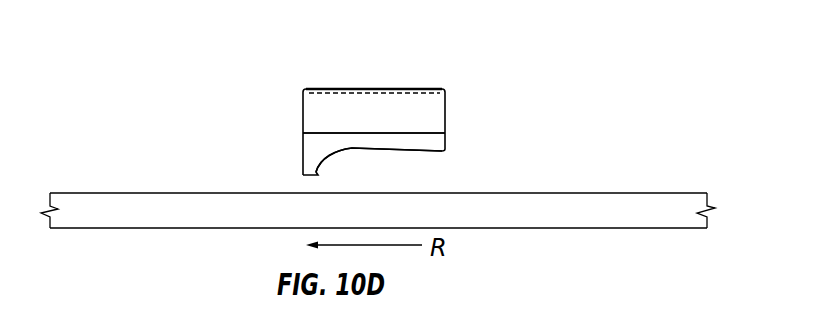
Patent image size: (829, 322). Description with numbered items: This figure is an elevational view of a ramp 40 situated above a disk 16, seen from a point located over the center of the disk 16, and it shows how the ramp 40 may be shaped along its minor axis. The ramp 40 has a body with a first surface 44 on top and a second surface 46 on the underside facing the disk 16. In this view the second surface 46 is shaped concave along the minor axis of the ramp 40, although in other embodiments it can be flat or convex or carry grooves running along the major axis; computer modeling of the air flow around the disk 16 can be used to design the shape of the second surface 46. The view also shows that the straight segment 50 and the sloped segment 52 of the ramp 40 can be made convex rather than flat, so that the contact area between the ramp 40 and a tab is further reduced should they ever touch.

The disk 16 is at (578, 222).
The ramp 40 is at (296, 122).
The first surface 44 is at (319, 89).
The straight segment 50 is at (364, 84).
The sloped segment 52 is at (383, 131).
The second surface 46 is at (364, 154).